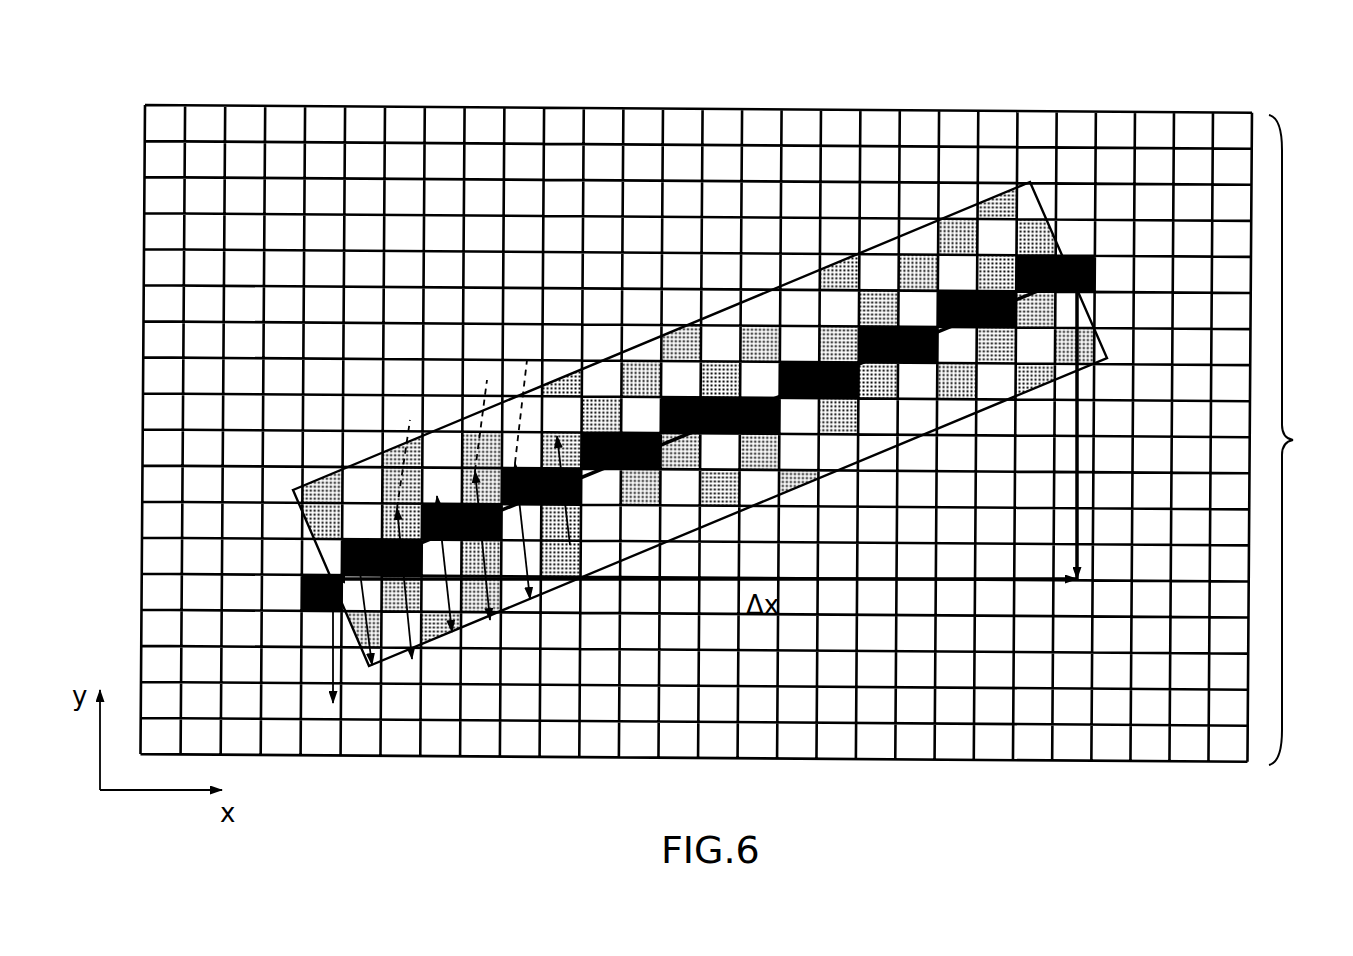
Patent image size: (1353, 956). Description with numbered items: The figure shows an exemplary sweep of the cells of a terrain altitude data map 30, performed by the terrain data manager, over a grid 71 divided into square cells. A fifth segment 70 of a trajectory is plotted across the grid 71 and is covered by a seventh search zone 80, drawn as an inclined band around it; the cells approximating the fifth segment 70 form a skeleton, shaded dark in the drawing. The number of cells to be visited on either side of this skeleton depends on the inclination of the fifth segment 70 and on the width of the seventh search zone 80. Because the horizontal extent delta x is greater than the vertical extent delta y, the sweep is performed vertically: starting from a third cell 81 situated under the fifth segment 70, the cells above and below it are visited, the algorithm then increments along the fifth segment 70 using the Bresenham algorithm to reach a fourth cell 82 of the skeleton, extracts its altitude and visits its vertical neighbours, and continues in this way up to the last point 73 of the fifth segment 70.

The terrain altitude data map 30 is at (325, 102).
The seventh search zone 80 is at (648, 345).
The fifth segment 70 is at (1007, 292).
The last point 73 is at (1077, 275).
The grid 71 is at (1307, 440).
The fourth cell 82 is at (357, 549).
The third cell 81 is at (307, 594).